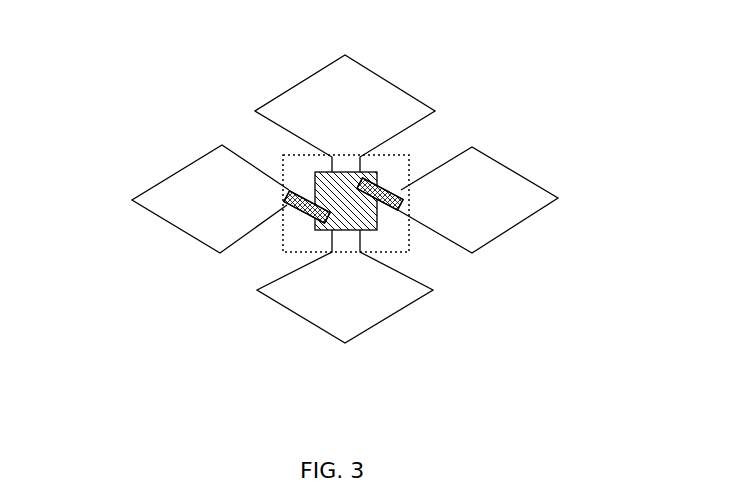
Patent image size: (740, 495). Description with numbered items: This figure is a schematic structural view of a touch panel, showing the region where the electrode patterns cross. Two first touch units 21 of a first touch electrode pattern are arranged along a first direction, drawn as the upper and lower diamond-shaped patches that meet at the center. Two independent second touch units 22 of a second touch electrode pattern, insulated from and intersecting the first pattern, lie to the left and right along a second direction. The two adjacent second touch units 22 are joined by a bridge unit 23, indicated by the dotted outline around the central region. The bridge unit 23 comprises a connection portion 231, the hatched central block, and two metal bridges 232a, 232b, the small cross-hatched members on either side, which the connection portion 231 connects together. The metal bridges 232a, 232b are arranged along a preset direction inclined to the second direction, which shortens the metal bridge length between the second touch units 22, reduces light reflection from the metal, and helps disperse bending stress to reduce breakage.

The first touch unit 21 is at (345, 93).
The second touch unit 22 is at (203, 200).
The bridge unit 23 is at (400, 162).
The connection portion 231 is at (315, 178).
The metal bridge 232a is at (300, 213).
The metal bridge 232b is at (398, 209).